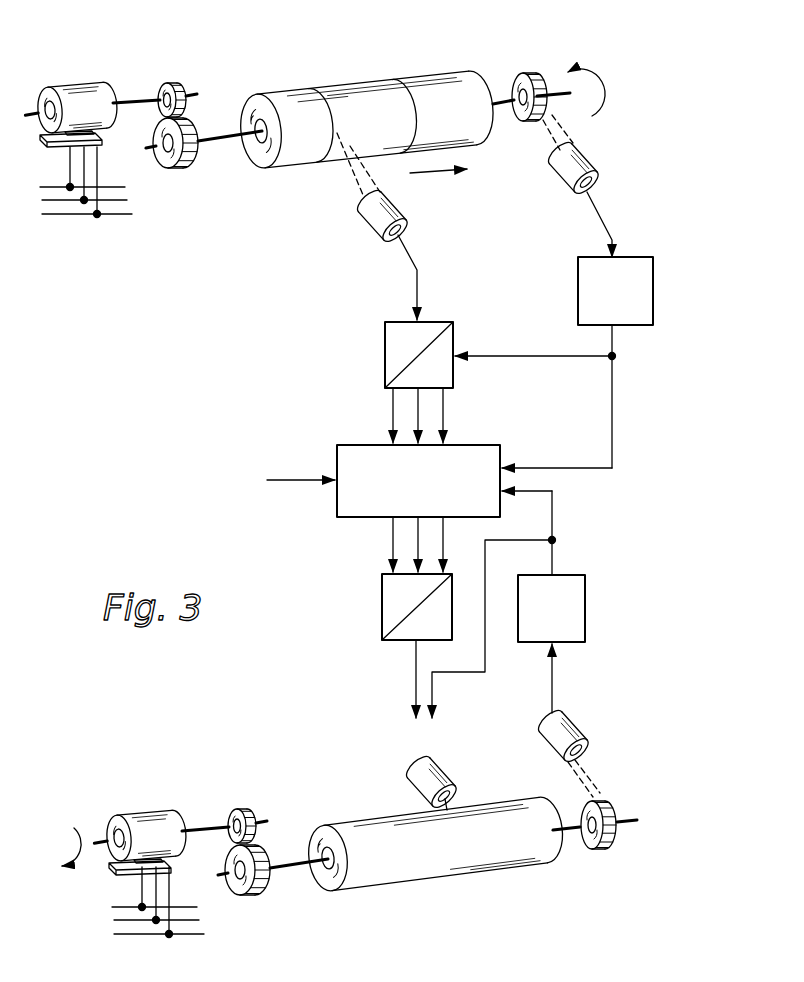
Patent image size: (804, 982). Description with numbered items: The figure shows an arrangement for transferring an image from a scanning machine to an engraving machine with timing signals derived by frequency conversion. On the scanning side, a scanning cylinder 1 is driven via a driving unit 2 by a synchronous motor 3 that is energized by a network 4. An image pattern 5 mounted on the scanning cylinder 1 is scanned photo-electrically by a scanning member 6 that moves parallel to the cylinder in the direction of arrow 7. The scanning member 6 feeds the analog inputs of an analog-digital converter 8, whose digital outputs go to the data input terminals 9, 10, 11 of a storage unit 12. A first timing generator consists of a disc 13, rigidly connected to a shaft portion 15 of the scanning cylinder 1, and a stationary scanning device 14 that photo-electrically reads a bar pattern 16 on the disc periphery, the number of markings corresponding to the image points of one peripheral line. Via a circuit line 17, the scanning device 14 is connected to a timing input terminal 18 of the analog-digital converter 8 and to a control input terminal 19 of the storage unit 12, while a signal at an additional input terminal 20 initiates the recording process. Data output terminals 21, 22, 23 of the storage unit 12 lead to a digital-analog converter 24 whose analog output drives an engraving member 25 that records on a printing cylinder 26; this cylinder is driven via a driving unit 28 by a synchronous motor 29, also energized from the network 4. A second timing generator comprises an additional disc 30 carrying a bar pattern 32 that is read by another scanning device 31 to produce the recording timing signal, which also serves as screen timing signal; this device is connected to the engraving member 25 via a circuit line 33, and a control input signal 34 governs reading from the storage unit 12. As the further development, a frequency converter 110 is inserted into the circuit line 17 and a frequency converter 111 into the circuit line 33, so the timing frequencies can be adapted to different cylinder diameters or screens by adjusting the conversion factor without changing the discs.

The scanning cylinder 1 is at (364, 94).
The driving unit 2 is at (173, 167).
The synchronous motor 3 is at (82, 92).
The network 4 is at (58, 207).
The image pattern 5 is at (332, 108).
The scanning member 6 is at (360, 217).
The arrow 7 is at (427, 173).
The analog-digital converter 8 is at (390, 332).
The data input terminal 9 is at (392, 438).
The data input terminal 10 is at (430, 435).
The data input terminal 11 is at (447, 438).
The storage unit 12 is at (338, 457).
The disc 13 is at (518, 77).
The scanning device 14 is at (570, 162).
The shaft portion 15 is at (500, 110).
The bar pattern 16 is at (545, 70).
The circuit line 17 is at (603, 210).
The timing input terminal 18 is at (458, 343).
The control input terminal 19 is at (507, 463).
The additional input terminal 20 is at (337, 483).
The data output terminal 21 is at (387, 520).
The data output terminal 22 is at (418, 520).
The data output terminal 23 is at (440, 520).
The digital-analog converter 24 is at (387, 590).
The engraving member 25 is at (427, 775).
The printing cylinder 26 is at (397, 857).
The driving unit 28 is at (237, 892).
The synchronous motor 29 is at (148, 837).
The disc 30 is at (585, 852).
The scanning device 31 is at (563, 732).
The bar pattern 32 is at (610, 800).
The circuit line 33 is at (555, 520).
The control input signal 34 is at (505, 495).
The frequency converter 110 is at (583, 280).
The frequency converter 111 is at (575, 588).